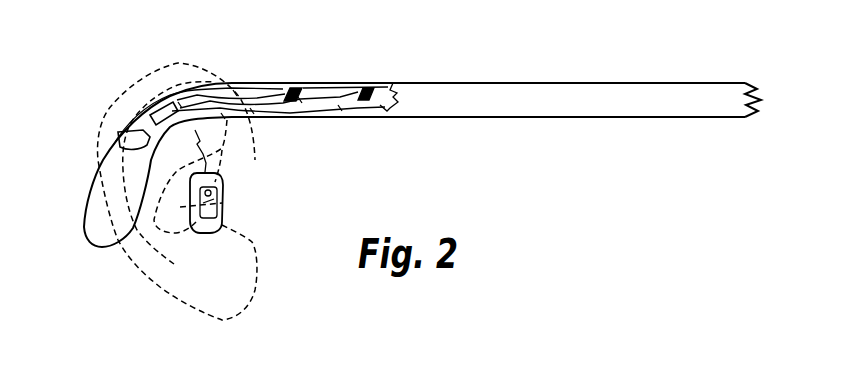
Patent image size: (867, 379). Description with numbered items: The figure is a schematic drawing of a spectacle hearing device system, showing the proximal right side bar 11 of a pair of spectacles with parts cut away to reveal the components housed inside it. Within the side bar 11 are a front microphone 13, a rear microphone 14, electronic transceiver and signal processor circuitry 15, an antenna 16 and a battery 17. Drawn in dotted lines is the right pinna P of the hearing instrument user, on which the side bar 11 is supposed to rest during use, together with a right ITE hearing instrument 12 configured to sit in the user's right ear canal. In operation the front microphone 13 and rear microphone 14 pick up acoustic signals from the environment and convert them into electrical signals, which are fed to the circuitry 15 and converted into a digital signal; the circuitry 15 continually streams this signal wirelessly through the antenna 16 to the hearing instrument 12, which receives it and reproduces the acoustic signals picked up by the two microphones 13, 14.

The spectacle side bar 11 is at (700, 117).
The ITE hearing instrument 12 is at (229, 200).
The front microphone 13 is at (370, 86).
The rear microphone 14 is at (297, 86).
The electronic transceiver and signal processor circuitry 15 is at (150, 106).
The antenna 16 is at (203, 90).
The battery 17 is at (123, 133).
The right pinna P is at (160, 287).